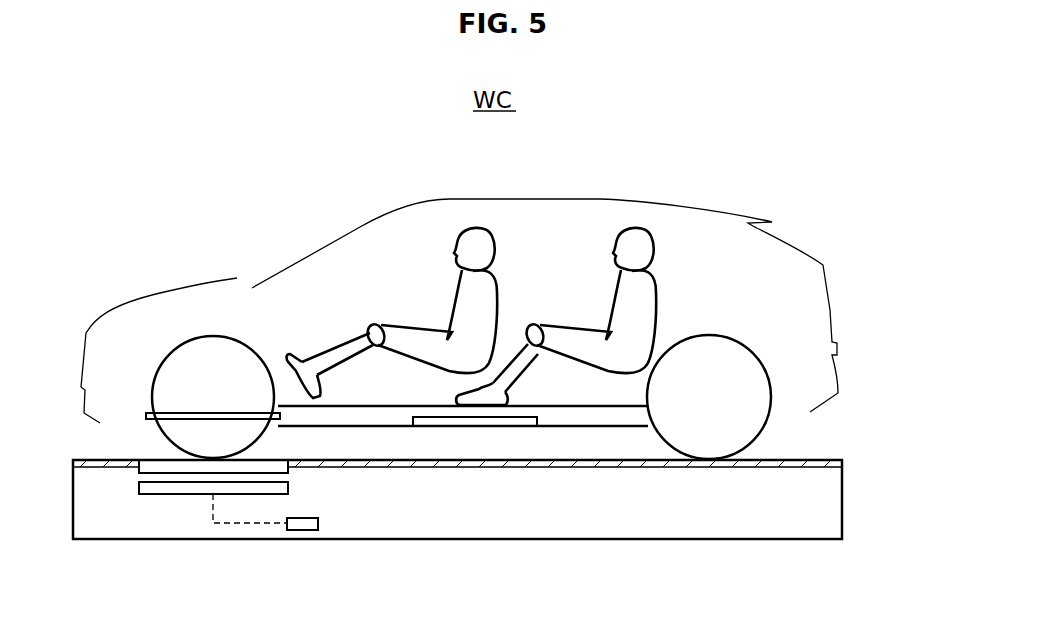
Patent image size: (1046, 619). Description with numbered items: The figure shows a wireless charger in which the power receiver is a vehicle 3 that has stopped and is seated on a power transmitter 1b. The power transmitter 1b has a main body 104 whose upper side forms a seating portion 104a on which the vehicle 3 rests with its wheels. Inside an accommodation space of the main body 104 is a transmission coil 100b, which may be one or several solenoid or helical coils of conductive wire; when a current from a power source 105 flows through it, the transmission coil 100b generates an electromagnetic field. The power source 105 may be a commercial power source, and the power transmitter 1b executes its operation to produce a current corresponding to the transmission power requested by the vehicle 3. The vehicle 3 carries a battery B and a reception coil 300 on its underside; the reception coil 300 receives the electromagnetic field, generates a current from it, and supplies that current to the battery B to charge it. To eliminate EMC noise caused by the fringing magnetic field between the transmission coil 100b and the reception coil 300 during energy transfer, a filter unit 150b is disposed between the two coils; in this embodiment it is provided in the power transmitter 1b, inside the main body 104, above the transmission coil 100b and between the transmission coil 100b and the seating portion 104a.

The vehicle 3 is at (676, 205).
The reception coil 300 is at (280, 417).
The battery B is at (458, 423).
The power transmitter 1b is at (501, 502).
The main body 104 is at (810, 532).
The seating portion 104a is at (803, 463).
The filter unit 150b is at (150, 463).
The transmission coil 100b is at (288, 485).
The power source 105 is at (318, 524).